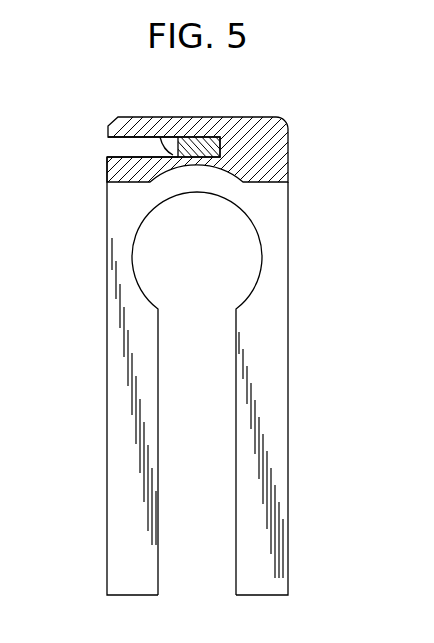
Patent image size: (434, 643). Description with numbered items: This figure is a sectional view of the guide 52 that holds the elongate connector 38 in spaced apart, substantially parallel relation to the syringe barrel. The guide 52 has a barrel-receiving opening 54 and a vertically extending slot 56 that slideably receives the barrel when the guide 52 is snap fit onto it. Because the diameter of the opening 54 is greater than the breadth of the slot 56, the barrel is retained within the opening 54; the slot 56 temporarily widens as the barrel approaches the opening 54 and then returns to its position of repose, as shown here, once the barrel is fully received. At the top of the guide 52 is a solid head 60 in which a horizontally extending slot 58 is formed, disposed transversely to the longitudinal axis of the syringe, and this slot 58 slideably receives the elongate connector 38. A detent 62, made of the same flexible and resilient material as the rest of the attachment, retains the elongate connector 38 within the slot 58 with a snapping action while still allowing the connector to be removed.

The elongate connector 38 is at (218, 120).
The guide 52 is at (94, 357).
The barrel-receiving opening 54 is at (133, 264).
The vertically extending slot 56 is at (155, 498).
The horizontally extending slot 58 is at (108, 138).
The solid head 60 is at (156, 100).
The detent 62 is at (190, 115).